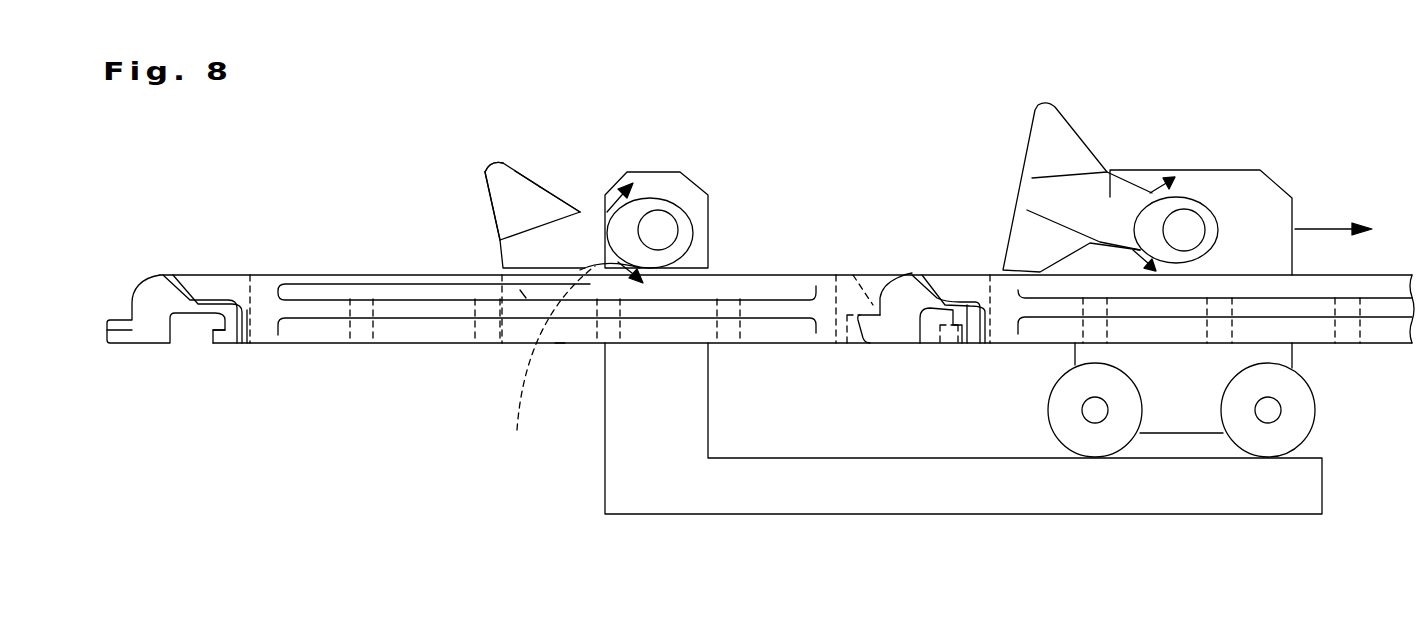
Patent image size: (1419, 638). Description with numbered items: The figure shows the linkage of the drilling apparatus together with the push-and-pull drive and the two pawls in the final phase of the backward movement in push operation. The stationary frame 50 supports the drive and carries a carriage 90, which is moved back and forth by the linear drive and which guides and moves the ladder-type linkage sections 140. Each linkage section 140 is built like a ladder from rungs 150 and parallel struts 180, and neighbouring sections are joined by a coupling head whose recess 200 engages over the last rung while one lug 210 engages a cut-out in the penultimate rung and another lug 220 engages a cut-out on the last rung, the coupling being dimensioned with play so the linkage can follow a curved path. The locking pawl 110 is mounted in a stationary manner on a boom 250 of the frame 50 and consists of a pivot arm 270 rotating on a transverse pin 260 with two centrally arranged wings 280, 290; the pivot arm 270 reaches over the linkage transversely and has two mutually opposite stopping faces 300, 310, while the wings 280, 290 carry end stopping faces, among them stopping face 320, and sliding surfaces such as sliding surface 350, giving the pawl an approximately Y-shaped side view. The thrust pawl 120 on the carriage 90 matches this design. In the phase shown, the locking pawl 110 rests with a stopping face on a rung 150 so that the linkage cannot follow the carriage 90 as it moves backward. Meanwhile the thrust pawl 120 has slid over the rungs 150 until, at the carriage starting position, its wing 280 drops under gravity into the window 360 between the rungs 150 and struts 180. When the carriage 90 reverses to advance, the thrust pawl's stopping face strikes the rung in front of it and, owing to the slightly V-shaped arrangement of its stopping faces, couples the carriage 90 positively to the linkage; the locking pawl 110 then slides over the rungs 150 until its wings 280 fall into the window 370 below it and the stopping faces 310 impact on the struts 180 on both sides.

The stationary frame 50 is at (663, 465).
The carriage 90 is at (1253, 217).
The locking pawl 110 is at (505, 183).
The thrust pawl 120 is at (1050, 127).
The linkage section 140 is at (332, 290).
The rungs 150 is at (473, 340).
The parallel struts 180 is at (827, 310).
The recess 200 is at (193, 368).
The lug 210 is at (148, 330).
The lug 220 is at (223, 337).
The boom 250 is at (697, 208).
The transverse pin 260 is at (660, 215).
The pivot arm 270 is at (590, 210).
The wing 280 is at (544, 367).
The wing 290 is at (523, 202).
The stopping face 300 is at (482, 184).
The stopping face 310 is at (522, 288).
The stopping face 320 is at (489, 220).
The sliding surface 350 is at (561, 192).
The window 360 is at (1040, 345).
The window 370 is at (559, 345).